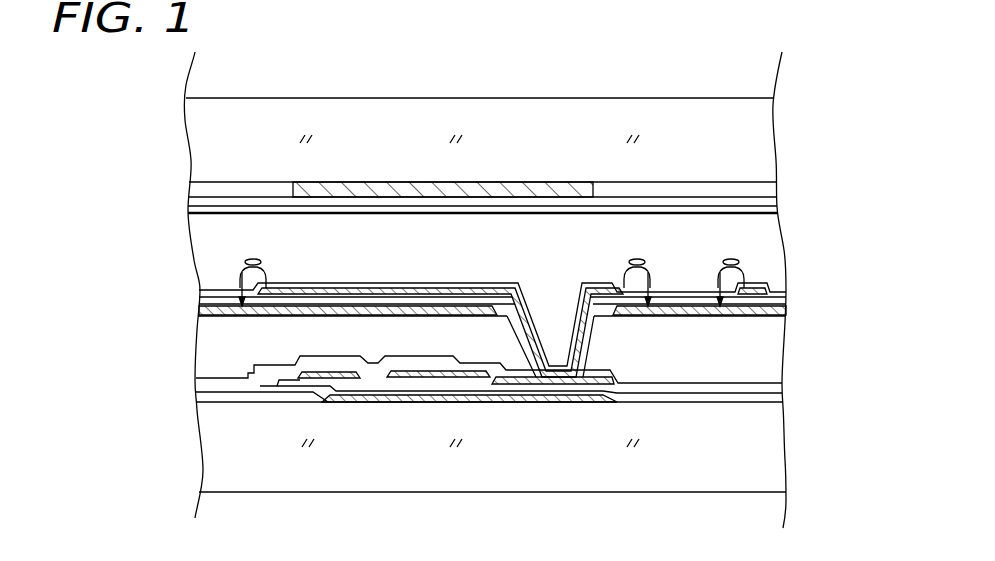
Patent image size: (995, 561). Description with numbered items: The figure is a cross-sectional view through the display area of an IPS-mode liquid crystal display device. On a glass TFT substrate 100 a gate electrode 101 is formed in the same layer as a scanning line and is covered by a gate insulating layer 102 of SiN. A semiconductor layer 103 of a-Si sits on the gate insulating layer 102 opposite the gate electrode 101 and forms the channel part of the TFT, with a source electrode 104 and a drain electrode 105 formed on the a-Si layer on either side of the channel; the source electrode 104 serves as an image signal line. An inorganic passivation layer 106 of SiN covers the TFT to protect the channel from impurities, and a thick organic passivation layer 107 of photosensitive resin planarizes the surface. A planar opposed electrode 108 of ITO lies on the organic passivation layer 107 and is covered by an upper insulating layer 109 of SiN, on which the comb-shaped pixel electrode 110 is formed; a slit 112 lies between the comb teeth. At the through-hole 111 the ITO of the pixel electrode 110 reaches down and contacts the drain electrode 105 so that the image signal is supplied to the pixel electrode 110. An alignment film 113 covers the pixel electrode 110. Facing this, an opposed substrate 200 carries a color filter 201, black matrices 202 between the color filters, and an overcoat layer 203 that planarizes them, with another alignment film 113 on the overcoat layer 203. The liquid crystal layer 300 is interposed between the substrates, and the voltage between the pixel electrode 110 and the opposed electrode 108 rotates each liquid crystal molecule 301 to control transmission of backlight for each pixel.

The TFT substrate 100 is at (255, 456).
The gate electrode 101 is at (378, 398).
The gate insulating layer 102 is at (205, 399).
The semiconductor layer 103 is at (426, 371).
The source electrode 104 is at (334, 379).
The drain electrode 105 is at (476, 374).
The inorganic passivation layer 106 is at (203, 379).
The organic passivation layer 107 is at (205, 353).
The opposed electrode 108 is at (199, 315).
The upper insulating layer 109 is at (215, 297).
The pixel electrode 110 is at (459, 288).
The through-hole 111 is at (561, 372).
The slit 112 is at (653, 290).
The alignment film 113 is at (775, 213).
The opposed substrate 200 is at (762, 143).
The color filter 201 is at (765, 184).
The black matrix 202 is at (570, 182).
The overcoat layer 203 is at (762, 202).
The liquid crystal layer 300 is at (549, 265).
The liquid crystal molecule 301 is at (719, 280).